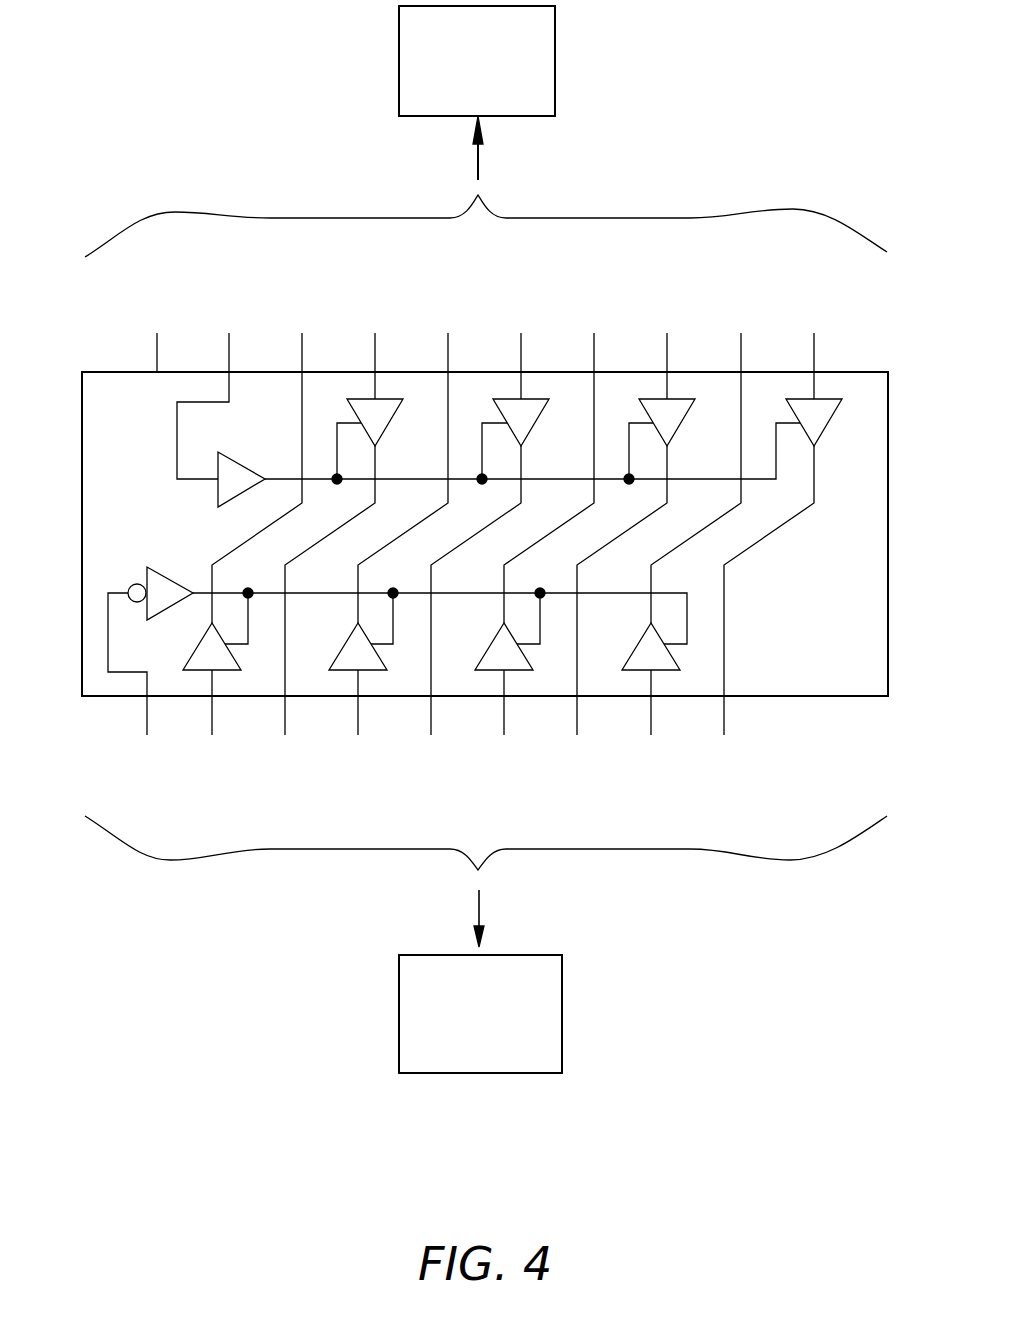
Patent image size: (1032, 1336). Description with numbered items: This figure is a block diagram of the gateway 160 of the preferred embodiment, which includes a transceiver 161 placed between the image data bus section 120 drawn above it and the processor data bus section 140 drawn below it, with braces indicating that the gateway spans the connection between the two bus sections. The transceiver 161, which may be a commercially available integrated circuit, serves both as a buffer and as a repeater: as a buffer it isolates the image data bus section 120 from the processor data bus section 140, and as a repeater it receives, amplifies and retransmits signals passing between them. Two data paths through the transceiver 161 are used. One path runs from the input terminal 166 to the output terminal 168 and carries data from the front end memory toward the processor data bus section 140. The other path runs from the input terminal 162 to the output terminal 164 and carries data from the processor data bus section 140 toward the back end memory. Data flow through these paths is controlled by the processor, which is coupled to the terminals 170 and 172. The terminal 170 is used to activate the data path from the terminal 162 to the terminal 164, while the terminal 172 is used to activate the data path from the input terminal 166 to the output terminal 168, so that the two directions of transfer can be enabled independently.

The image data bus section 120 is at (398, 62).
The processor data bus section 140 is at (398, 1017).
The gateway 160 is at (140, 152).
The transceiver 161 is at (102, 372).
The input terminal 162 is at (242, 550).
The output terminal 164 is at (214, 390).
The input terminal 166 is at (783, 514).
The output terminal 168 is at (684, 550).
The terminal 170 is at (150, 667).
The terminal 172 is at (200, 404).